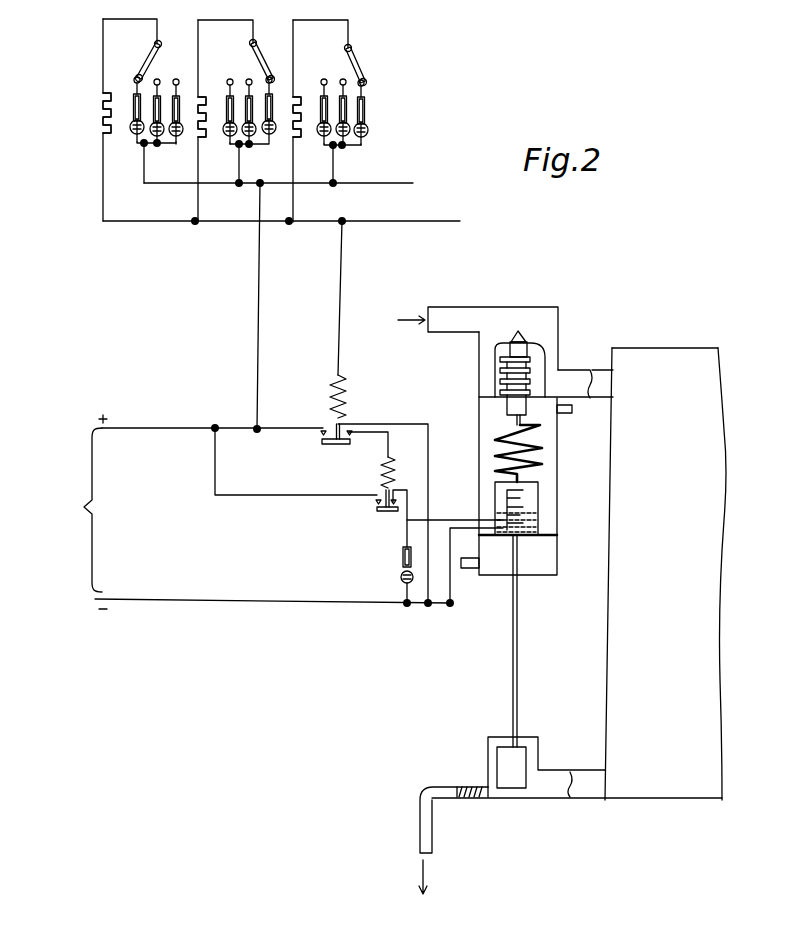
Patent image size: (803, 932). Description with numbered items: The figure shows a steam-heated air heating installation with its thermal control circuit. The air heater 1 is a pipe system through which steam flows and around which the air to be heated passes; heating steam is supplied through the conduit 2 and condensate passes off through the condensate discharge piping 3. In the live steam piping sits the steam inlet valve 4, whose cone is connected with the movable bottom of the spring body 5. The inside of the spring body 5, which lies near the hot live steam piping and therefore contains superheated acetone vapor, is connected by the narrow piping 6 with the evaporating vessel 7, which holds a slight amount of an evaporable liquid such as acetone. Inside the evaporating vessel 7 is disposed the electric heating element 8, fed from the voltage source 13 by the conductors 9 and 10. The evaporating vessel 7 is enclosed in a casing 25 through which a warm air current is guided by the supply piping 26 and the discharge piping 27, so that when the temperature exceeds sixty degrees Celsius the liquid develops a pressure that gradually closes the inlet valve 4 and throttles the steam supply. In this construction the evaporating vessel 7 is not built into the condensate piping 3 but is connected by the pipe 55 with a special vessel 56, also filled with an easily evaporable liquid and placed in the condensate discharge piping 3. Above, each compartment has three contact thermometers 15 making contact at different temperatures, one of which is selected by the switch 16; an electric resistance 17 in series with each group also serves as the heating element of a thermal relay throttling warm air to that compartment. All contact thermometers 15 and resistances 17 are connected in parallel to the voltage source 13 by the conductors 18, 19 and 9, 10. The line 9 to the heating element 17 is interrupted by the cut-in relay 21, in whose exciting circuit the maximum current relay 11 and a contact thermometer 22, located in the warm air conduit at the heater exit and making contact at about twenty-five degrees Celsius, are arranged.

The air heater 1 is at (665, 357).
The conduit 2 is at (453, 315).
The condensate discharge piping 3 is at (427, 803).
The steam inlet valve 4 is at (518, 330).
The spring body 5 is at (538, 362).
The narrow piping 6 is at (535, 445).
The evaporating vessel 7 is at (533, 525).
The electric heating element 8 is at (522, 508).
The conductor 9 is at (152, 428).
The conductor 10 is at (180, 602).
The maximum current relay 11 is at (348, 452).
The voltage source 13 is at (81, 512).
The contact thermometers 15 is at (152, 134).
The switch 16 is at (160, 55).
The electric resistance 17 is at (98, 117).
The conductor 18 is at (258, 292).
The conductor 19 is at (342, 287).
The cut-in relay 21 is at (385, 503).
The contact thermometer 22 is at (402, 567).
The casing 25 is at (557, 482).
The supply piping 26 is at (468, 570).
The discharge piping 27 is at (565, 413).
The pipe 55 is at (512, 663).
The special vessel 56 is at (507, 747).